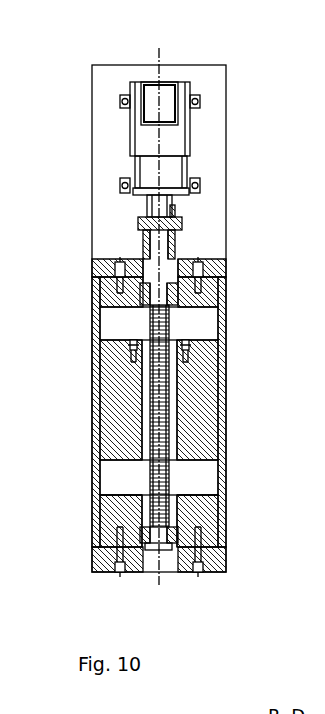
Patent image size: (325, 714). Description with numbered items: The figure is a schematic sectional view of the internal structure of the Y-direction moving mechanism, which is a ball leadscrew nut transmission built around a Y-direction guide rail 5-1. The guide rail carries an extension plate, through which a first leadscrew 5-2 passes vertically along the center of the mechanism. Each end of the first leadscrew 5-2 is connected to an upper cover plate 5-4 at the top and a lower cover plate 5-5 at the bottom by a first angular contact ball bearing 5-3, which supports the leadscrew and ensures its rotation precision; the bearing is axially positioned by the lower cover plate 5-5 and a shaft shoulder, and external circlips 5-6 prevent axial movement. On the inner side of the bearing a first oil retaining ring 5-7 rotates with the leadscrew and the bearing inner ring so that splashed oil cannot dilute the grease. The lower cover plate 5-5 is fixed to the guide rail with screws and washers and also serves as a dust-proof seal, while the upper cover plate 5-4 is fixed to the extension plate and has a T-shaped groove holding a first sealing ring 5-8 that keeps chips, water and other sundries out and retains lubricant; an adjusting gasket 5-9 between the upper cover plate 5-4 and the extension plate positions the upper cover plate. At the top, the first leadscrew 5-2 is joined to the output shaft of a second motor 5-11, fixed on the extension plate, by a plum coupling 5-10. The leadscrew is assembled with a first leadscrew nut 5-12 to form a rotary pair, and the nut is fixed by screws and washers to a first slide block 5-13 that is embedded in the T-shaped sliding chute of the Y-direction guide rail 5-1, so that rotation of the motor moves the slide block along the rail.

The Y-direction guide rail 5-1 is at (125, 112).
The first leadscrew 5-2 is at (102, 408).
The first angular contact ball bearing 5-3 is at (140, 500).
The upper cover plate 5-4 is at (138, 258).
The lower cover plate 5-5 is at (95, 570).
The external circlips 5-6 is at (163, 572).
The first oil retaining ring 5-7 is at (100, 452).
The first sealing ring 5-8 is at (177, 258).
The adjusting gasket 5-9 is at (100, 258).
The plum coupling 5-10 is at (145, 207).
The second motor 5-11 is at (150, 100).
The first leadscrew nut 5-12 is at (103, 332).
The first slide block 5-13 is at (104, 362).